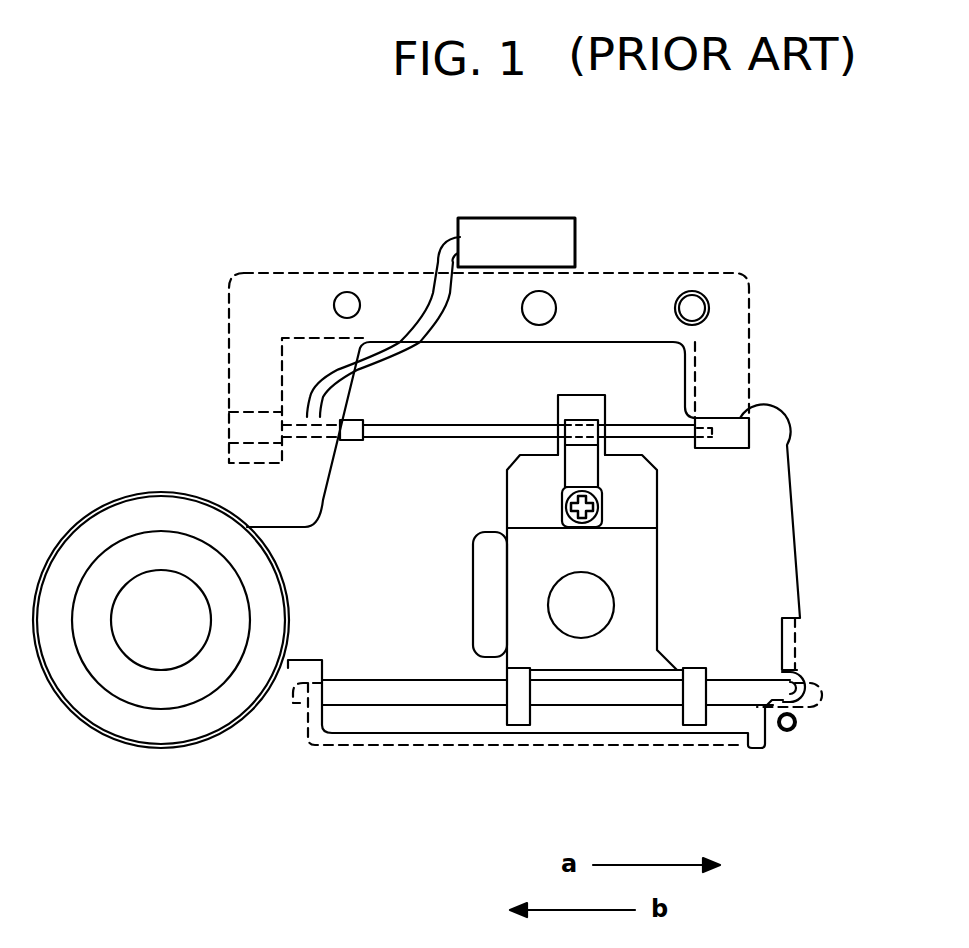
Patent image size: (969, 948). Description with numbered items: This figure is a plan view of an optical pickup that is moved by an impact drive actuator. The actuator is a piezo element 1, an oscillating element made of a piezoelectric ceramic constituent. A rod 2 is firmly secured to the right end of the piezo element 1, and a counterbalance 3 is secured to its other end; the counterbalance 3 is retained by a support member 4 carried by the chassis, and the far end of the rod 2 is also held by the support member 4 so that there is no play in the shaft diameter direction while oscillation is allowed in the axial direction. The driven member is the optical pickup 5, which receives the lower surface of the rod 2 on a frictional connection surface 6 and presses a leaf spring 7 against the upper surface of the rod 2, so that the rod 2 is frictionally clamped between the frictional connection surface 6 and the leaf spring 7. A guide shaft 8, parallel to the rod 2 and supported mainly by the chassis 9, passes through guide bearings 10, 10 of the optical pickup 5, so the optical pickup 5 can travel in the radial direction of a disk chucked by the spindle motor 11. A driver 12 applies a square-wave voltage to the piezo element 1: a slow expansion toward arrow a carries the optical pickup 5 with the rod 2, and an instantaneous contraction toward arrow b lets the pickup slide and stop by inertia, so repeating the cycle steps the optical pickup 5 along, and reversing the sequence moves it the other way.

The piezo element 1 is at (355, 440).
The rod 2 is at (430, 428).
The counterbalance 3 is at (245, 436).
The support member 4 is at (262, 371).
The optical pickup 5 is at (637, 572).
The frictional connection surface 6 is at (590, 407).
The leaf spring 7 is at (578, 420).
The guide shaft 8 is at (418, 705).
The chassis 9 is at (293, 715).
The guide bearings 10 is at (517, 725).
The spindle motor 11 is at (165, 693).
The driver 12 is at (553, 218).